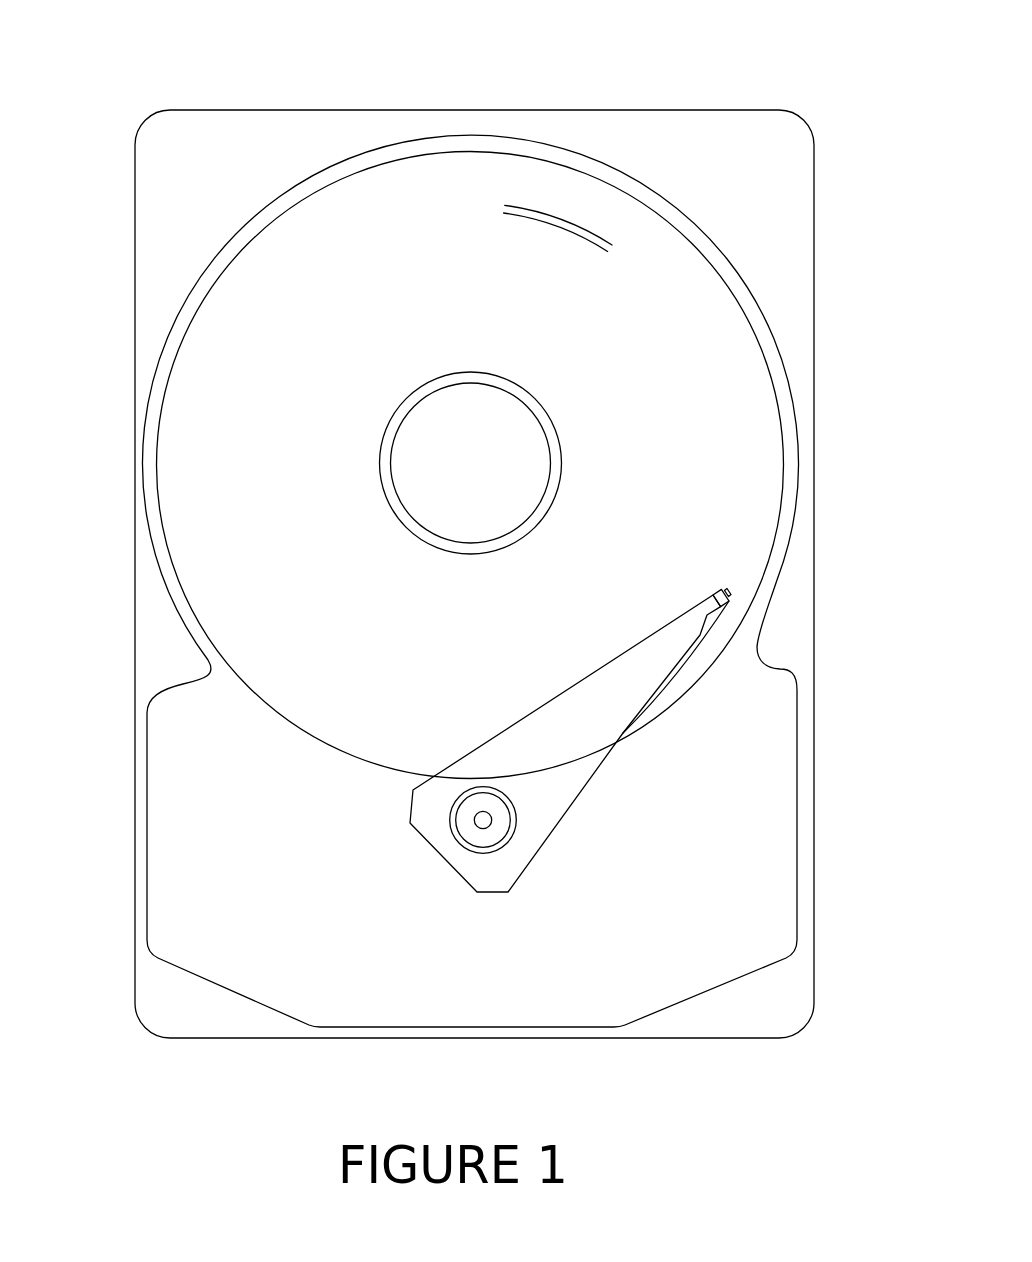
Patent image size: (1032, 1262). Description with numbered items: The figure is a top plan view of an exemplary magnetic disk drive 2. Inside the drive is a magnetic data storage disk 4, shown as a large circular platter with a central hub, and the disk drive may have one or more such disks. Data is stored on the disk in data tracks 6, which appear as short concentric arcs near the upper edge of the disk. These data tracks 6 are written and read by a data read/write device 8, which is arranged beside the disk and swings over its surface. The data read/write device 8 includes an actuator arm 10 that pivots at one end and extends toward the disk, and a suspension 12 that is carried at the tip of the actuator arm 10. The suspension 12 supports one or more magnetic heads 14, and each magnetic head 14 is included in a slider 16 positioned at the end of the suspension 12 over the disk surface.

The magnetic disk drive 2 is at (100, 180).
The magnetic data storage disk 4 is at (350, 232).
The data tracks 6 is at (530, 203).
The data read/write device 8 is at (668, 714).
The actuator arm 10 is at (553, 760).
The suspension 12 is at (702, 615).
The magnetic head 14 is at (727, 591).
The slider 16 is at (845, 553).